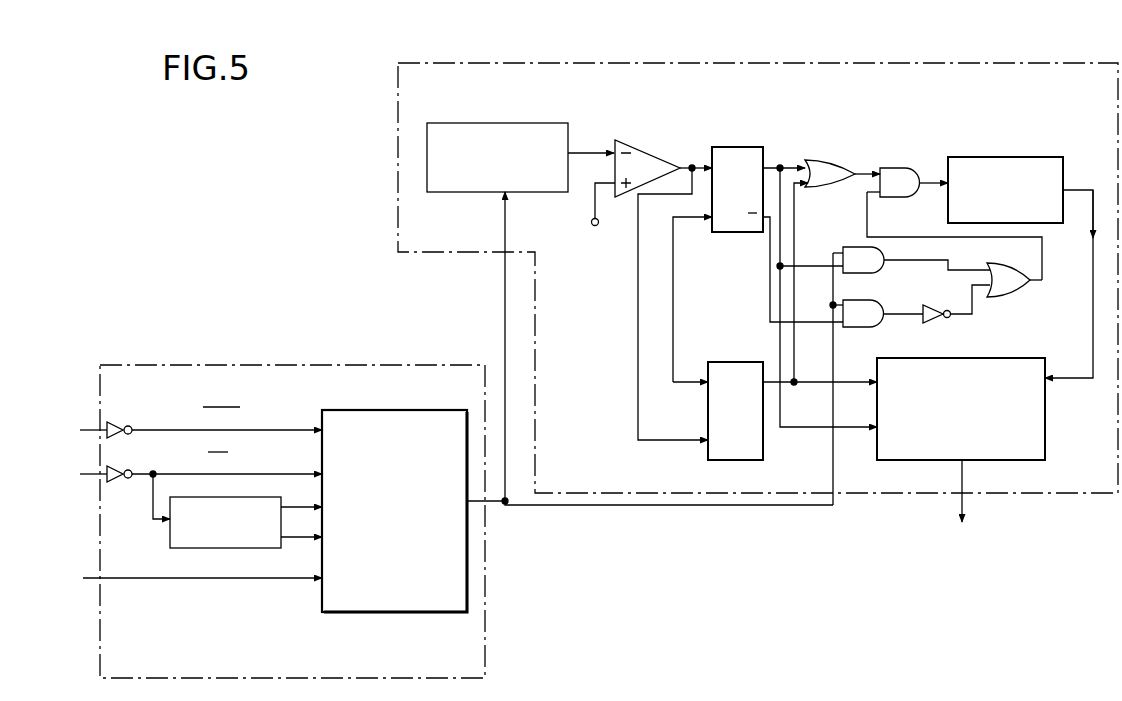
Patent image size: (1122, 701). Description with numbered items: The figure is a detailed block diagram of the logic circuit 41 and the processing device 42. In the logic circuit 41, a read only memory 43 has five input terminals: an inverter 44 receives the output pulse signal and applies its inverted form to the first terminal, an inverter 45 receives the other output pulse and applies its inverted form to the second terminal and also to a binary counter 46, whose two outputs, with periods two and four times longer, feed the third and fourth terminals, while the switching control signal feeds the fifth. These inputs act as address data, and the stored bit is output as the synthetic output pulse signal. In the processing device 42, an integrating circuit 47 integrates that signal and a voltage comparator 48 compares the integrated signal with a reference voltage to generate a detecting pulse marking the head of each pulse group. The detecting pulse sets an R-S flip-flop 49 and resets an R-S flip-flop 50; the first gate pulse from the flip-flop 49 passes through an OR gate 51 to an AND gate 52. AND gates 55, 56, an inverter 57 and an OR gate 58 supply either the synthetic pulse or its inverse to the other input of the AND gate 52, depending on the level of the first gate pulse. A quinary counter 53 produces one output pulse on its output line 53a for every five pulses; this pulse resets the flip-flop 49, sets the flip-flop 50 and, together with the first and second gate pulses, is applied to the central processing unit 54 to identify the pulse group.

The logic circuit 41 is at (255, 365).
The processing device 42 is at (745, 63).
The read only memory 43 is at (398, 410).
The inverter 44 is at (118, 422).
The inverter 45 is at (120, 482).
The binary counter 46 is at (195, 548).
The integrating circuit 47 is at (495, 123).
The voltage comparator 48 is at (648, 152).
The R-S flip-flop 49 is at (737, 147).
The R-S flip-flop 50 is at (728, 362).
The OR gate 51 is at (822, 160).
The AND gate 52 is at (893, 168).
The quinary counter 53 is at (998, 157).
The output line 53a is at (1072, 185).
The central processing unit 54 is at (1045, 425).
The AND gate 55 is at (880, 270).
The AND gate 56 is at (878, 327).
The inverter 57 is at (937, 323).
The OR gate 58 is at (1022, 290).